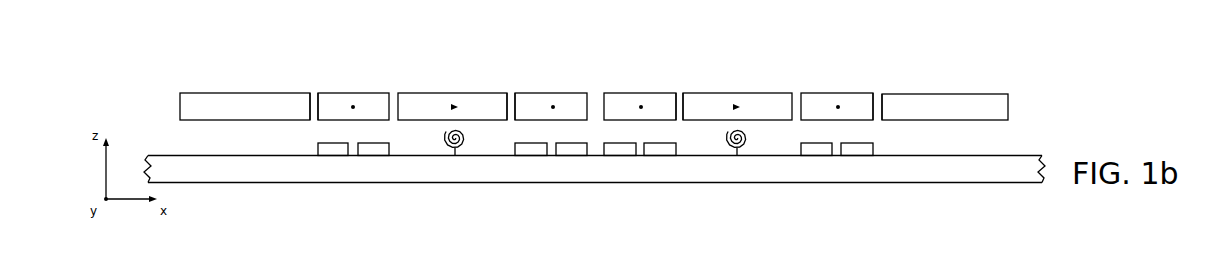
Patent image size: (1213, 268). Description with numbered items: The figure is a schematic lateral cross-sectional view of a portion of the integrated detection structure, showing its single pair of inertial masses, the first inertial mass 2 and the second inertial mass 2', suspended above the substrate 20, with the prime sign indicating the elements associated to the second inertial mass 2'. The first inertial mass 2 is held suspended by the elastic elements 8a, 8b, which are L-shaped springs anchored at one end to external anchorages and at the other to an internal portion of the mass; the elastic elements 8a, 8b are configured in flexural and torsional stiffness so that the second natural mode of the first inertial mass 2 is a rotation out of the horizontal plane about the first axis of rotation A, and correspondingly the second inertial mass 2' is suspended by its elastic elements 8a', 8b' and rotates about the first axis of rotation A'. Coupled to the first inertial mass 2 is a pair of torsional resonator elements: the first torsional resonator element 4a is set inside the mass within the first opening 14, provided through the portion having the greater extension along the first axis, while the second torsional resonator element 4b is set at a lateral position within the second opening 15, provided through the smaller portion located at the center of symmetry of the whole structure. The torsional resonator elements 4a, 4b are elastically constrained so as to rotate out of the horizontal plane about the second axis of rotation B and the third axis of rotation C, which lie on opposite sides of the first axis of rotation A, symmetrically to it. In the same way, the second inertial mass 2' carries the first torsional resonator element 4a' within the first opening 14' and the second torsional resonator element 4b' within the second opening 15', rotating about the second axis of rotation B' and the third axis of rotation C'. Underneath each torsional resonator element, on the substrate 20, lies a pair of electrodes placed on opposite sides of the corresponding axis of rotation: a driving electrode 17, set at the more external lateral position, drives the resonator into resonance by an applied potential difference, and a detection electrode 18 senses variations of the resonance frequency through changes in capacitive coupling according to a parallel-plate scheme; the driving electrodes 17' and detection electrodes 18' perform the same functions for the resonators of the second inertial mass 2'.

The first inertial mass 2 is at (245, 82).
The second inertial mass 2' is at (945, 82).
The first opening 14 is at (299, 82).
The first opening 14' is at (902, 83).
The first torsional resonator element 4a is at (353, 82).
The first torsional resonator element 4a' is at (837, 84).
The second torsional resonator element 4b is at (548, 86).
The second torsional resonator element 4b' is at (640, 84).
The second opening 15 is at (529, 72).
The second opening 15' is at (696, 72).
The elastic element 8a is at (471, 90).
The elastic element 8b is at (454, 142).
The elastic element 8a' is at (761, 93).
The elastic element 8b' is at (736, 142).
The driving electrode 17 is at (440, 139).
The driving electrode 17' is at (747, 139).
The detection electrode 18 is at (452, 141).
The detection electrode 18' is at (738, 141).
The substrate 20 is at (1037, 155).
The first axis of rotation A is at (452, 86).
The first axis of rotation A' is at (737, 85).
The second axis of rotation B is at (370, 79).
The second axis of rotation B' is at (854, 78).
The third axis of rotation C is at (564, 77).
The third axis of rotation C' is at (662, 77).